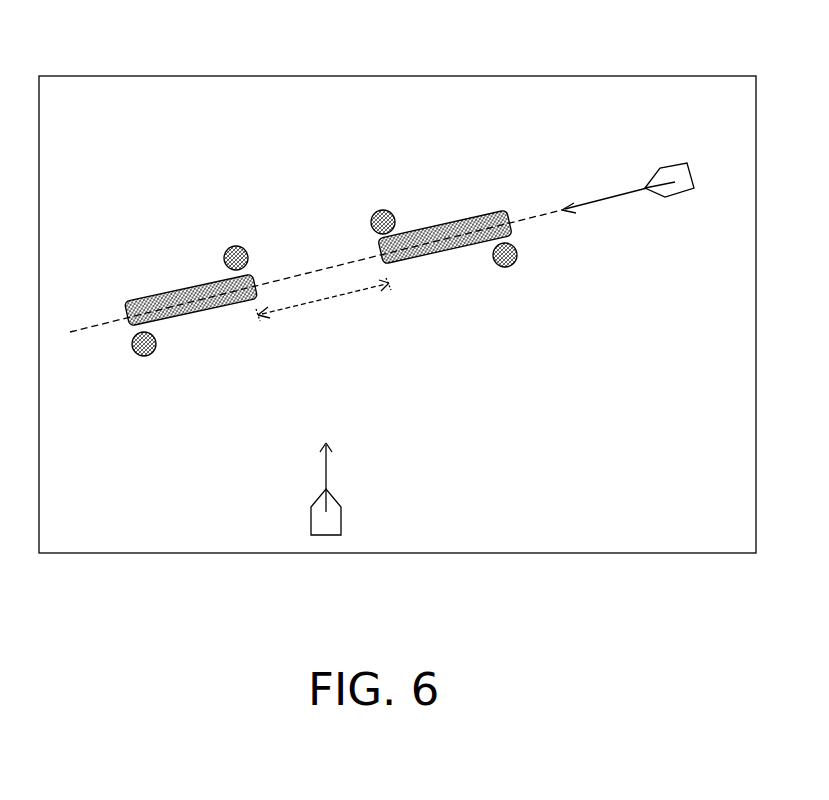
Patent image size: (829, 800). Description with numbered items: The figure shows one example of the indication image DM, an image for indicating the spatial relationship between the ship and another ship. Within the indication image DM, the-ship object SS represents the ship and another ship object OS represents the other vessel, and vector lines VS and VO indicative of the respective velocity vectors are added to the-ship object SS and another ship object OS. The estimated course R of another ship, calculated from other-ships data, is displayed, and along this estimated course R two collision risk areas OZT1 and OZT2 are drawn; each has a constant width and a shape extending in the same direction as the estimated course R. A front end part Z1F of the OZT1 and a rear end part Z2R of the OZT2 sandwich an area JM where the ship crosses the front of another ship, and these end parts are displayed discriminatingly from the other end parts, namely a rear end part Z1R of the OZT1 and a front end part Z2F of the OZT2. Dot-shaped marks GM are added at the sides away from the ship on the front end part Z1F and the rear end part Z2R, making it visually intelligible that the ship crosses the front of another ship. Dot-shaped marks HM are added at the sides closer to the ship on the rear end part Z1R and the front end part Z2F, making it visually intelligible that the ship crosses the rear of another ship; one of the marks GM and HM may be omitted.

The indication image DM is at (137, 75).
The estimated course R is at (87, 323).
The collision risk area OZT2 is at (180, 288).
The collision risk area OZT1 is at (450, 220).
The dot-shaped mark GM is at (237, 247).
The dot-shaped mark HM is at (147, 357).
The rear end part Z2R is at (258, 277).
The front end part Z2F is at (125, 327).
The front end part Z1F is at (378, 250).
The rear end part Z1R is at (513, 220).
The area where the ship crosses the front of another ship JM is at (323, 302).
The vector line VO is at (607, 193).
The another ship object OS is at (675, 163).
The the-ship object SS is at (312, 521).
The vector line VS is at (324, 475).